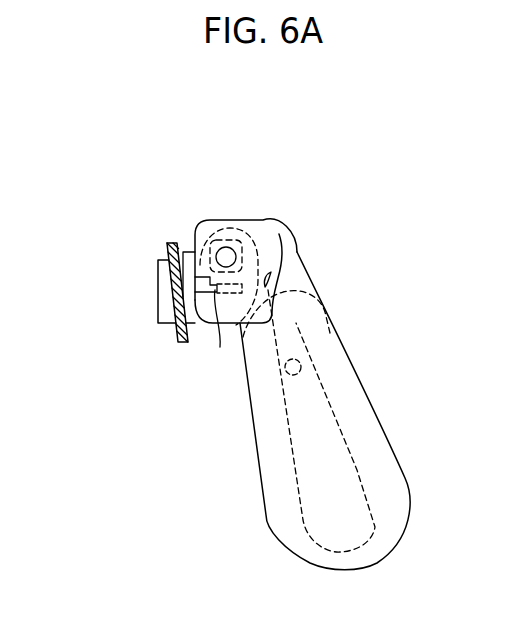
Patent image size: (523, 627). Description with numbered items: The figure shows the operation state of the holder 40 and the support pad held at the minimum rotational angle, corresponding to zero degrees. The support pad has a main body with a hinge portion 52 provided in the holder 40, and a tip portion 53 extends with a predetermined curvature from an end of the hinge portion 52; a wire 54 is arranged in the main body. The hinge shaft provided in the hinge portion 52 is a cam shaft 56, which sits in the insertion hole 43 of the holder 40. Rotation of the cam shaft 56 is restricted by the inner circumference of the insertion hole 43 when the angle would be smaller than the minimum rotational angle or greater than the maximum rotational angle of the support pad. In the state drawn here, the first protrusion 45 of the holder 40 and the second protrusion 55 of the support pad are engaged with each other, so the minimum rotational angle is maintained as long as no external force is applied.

The holder 40 is at (160, 307).
The insertion hole 43 is at (229, 246).
The first protrusion 45 is at (217, 357).
The hinge portion 52 is at (263, 238).
The tip portion 53 is at (345, 412).
The wire 54 is at (287, 350).
The second protrusion 55 is at (205, 277).
The cam shaft 56 is at (227, 256).